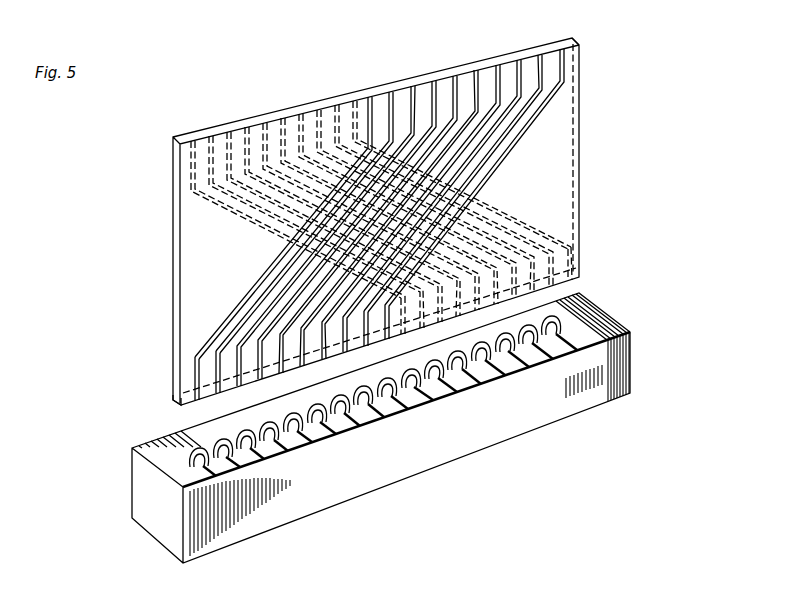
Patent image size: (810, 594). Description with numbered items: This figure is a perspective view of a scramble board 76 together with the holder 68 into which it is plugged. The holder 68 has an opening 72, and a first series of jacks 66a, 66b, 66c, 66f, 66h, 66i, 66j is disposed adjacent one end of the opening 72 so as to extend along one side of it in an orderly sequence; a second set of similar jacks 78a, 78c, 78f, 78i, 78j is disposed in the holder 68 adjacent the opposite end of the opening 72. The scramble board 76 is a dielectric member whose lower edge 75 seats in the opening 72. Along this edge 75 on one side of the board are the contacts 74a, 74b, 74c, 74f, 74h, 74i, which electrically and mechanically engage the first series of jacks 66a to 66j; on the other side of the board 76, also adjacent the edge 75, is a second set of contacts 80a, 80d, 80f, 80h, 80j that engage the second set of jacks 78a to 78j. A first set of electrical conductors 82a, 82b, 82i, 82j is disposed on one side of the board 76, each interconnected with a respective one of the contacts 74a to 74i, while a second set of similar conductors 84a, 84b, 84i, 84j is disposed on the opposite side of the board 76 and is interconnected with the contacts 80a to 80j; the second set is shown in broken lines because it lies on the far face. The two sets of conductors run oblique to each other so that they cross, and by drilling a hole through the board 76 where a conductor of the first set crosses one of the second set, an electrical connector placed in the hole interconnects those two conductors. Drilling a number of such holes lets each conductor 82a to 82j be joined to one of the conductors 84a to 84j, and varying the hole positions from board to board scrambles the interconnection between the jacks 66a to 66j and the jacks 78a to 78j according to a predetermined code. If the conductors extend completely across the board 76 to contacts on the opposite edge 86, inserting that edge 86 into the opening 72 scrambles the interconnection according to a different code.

The holder 68 is at (618, 402).
The opening 72 is at (179, 463).
The edge 75 is at (178, 397).
The scramble board 76 is at (586, 171).
The opposite edge 86 is at (576, 38).
The jack 66a is at (200, 468).
The jack 66b is at (232, 458).
The jack 66c is at (258, 448).
The jack 66f is at (316, 430).
The jack 66h is at (360, 412).
The jack 66i is at (388, 402).
The jack 66j is at (413, 392).
The jack 78a is at (420, 389).
The jack 78c is at (446, 380).
The jack 78f is at (490, 362).
The jack 78i is at (536, 344).
The jack 78j is at (586, 315).
The contact 74a is at (194, 399).
The contact 74b is at (215, 401).
The contact 74c is at (240, 390).
The contact 74f is at (305, 368).
The contact 74h is at (346, 354).
The contact 74i is at (384, 346).
The electrical conductor 82a is at (260, 280).
The electrical conductor 82b is at (258, 301).
The electrical conductor 82i is at (502, 143).
The electrical conductor 82j is at (506, 160).
The conductor 84a is at (233, 209).
The conductor 84b is at (252, 208).
The conductor 84i is at (492, 200).
The conductor 84j is at (510, 216).
The contact 80a is at (404, 340).
The contact 80d is at (459, 322).
The contact 80f is at (497, 310).
The contact 80h is at (534, 298).
The contact 80j is at (573, 288).